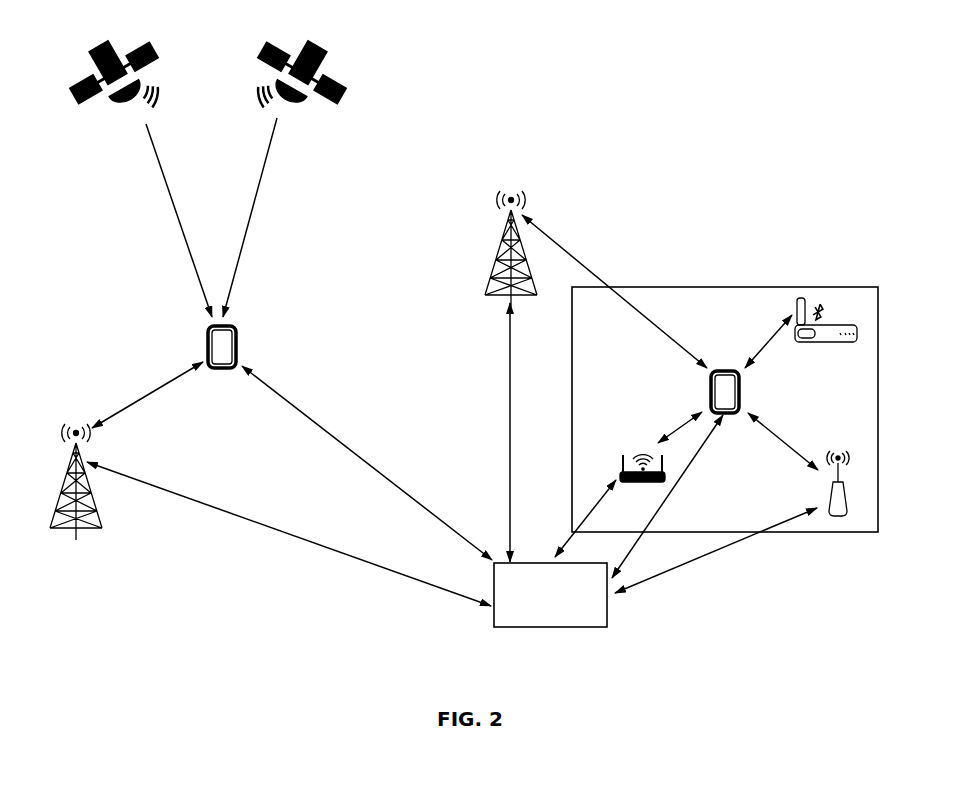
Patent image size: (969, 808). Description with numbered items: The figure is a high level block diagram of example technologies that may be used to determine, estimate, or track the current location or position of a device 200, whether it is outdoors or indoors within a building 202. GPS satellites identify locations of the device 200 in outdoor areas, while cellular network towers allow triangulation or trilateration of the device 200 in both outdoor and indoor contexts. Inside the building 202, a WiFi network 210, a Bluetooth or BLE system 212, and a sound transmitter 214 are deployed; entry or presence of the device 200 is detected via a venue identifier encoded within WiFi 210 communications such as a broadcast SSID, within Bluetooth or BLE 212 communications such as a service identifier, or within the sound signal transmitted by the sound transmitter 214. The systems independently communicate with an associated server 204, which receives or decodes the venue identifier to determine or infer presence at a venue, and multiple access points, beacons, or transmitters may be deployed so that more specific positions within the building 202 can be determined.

The device 200 is at (205, 345).
The building 202 is at (880, 287).
The server 204 is at (493, 576).
The WiFi (wireless local area network) 210 is at (641, 484).
The Bluetooth and/or BLE (Bluetooth Low Energy) 212 is at (832, 343).
The sound transmitter 214 is at (827, 500).